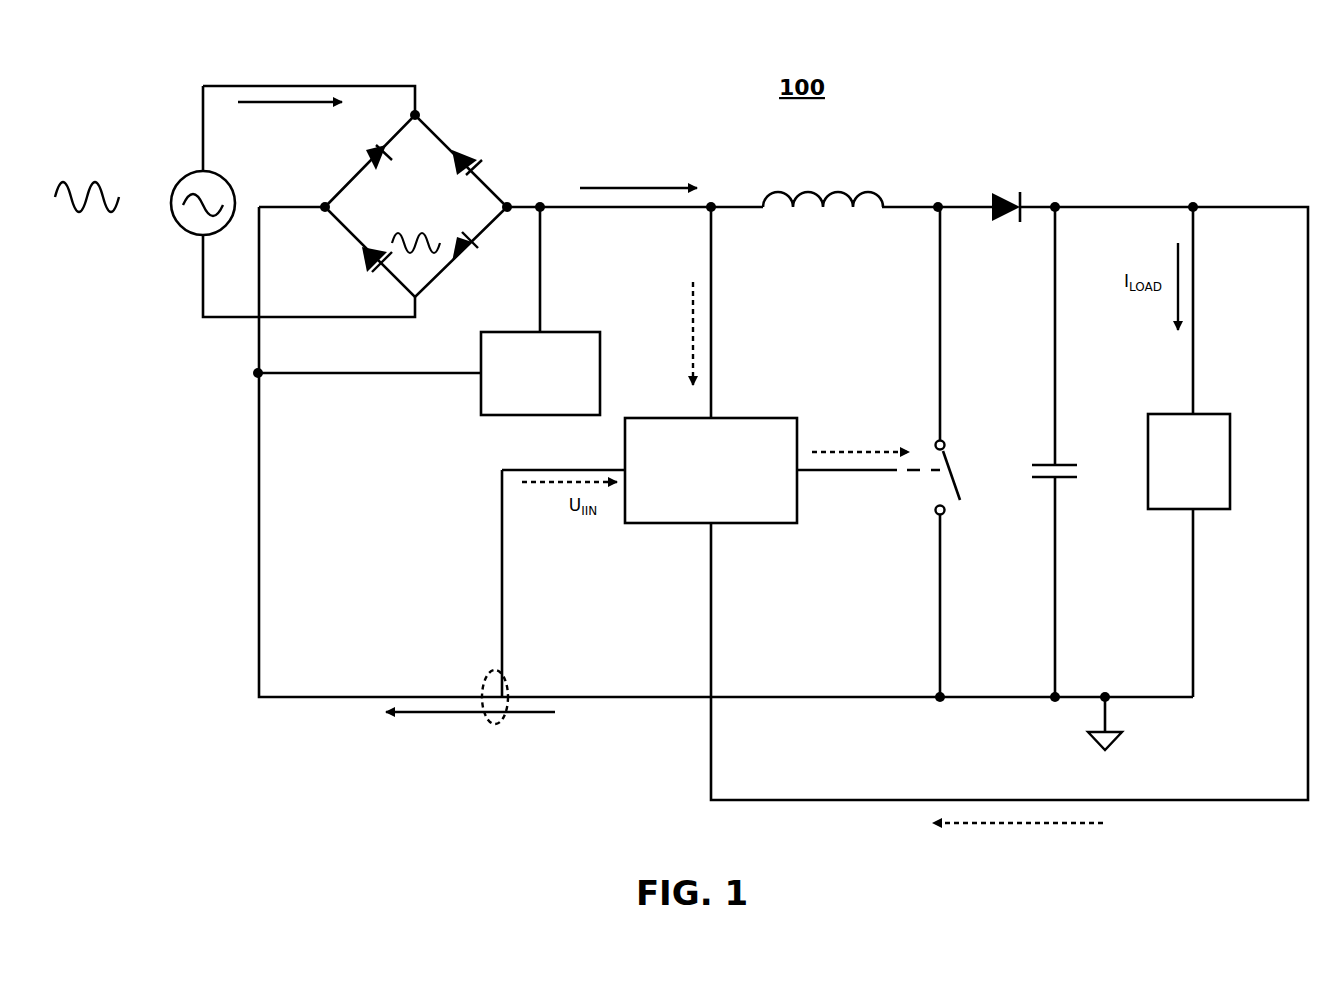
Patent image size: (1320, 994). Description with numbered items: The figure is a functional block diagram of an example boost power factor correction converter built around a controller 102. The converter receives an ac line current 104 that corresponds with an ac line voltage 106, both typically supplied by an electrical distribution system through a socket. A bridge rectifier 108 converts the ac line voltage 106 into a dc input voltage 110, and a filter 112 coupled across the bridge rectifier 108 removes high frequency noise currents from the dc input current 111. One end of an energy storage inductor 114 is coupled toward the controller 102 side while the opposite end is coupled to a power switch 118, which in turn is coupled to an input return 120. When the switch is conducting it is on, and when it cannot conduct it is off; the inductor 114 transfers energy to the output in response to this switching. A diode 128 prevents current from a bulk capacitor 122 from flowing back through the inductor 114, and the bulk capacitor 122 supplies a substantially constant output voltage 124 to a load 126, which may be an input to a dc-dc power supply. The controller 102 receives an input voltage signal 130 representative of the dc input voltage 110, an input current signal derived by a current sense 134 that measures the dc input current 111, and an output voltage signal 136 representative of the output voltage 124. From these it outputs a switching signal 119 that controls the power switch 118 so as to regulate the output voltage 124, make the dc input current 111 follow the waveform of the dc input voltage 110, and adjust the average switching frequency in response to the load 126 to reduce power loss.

The controller 102 is at (775, 525).
The ac line current IG 104 is at (285, 115).
The ac line voltage VG 106 is at (187, 155).
The bridge rectifier 108 is at (438, 133).
The dc input voltage VIN 110 is at (418, 202).
The dc input current IIN 111 is at (627, 158).
The filter 112 is at (475, 395).
The inductor L1 114 is at (823, 165).
The power switch SW1 118 is at (955, 450).
The switching signal USW 119 is at (845, 413).
The input return 120 is at (1093, 718).
The bulk capacitor 122 is at (1068, 488).
The output voltage VOUT 124 is at (1272, 402).
The load 126 is at (1148, 408).
The diode D1 128 is at (1028, 195).
The input voltage signal UVIN 130 is at (670, 318).
The current sense 134 is at (502, 725).
The output voltage signal UVOUT 136 is at (992, 832).